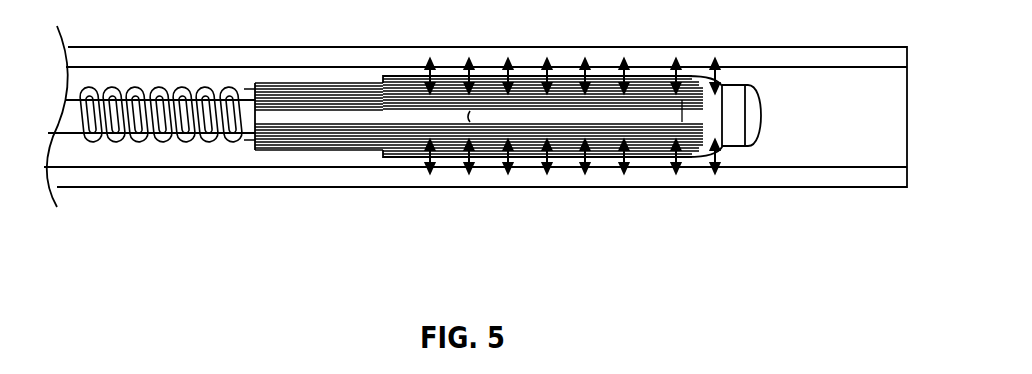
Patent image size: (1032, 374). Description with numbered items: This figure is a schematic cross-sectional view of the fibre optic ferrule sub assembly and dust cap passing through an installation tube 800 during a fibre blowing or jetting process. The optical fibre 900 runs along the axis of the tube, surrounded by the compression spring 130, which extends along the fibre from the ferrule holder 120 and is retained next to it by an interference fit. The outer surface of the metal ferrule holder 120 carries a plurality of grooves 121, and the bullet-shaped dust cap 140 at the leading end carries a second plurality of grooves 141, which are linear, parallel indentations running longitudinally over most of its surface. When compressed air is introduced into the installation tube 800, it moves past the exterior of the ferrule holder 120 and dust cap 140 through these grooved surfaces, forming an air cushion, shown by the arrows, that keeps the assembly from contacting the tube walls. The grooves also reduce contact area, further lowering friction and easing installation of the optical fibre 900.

The installation tube 800 is at (877, 182).
The optical fibre 900 is at (68, 127).
The compression spring 130 is at (192, 90).
The ferrule holder 120 is at (322, 95).
The plurality of grooves 121 is at (385, 98).
The dust cap 140 is at (652, 97).
The second plurality of grooves 141 is at (527, 92).